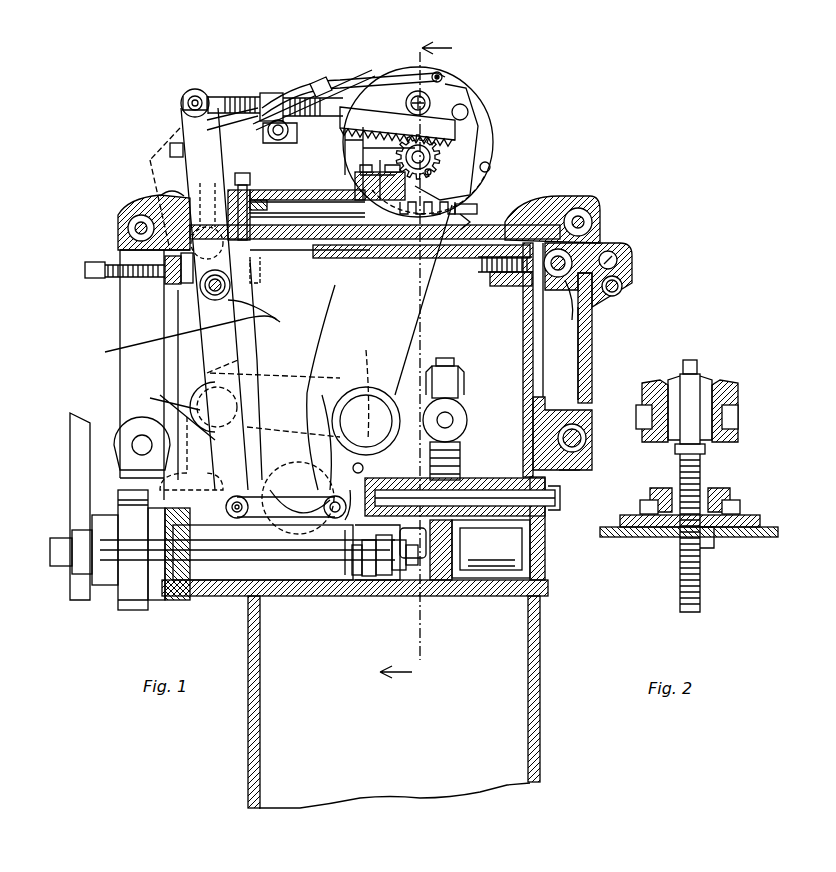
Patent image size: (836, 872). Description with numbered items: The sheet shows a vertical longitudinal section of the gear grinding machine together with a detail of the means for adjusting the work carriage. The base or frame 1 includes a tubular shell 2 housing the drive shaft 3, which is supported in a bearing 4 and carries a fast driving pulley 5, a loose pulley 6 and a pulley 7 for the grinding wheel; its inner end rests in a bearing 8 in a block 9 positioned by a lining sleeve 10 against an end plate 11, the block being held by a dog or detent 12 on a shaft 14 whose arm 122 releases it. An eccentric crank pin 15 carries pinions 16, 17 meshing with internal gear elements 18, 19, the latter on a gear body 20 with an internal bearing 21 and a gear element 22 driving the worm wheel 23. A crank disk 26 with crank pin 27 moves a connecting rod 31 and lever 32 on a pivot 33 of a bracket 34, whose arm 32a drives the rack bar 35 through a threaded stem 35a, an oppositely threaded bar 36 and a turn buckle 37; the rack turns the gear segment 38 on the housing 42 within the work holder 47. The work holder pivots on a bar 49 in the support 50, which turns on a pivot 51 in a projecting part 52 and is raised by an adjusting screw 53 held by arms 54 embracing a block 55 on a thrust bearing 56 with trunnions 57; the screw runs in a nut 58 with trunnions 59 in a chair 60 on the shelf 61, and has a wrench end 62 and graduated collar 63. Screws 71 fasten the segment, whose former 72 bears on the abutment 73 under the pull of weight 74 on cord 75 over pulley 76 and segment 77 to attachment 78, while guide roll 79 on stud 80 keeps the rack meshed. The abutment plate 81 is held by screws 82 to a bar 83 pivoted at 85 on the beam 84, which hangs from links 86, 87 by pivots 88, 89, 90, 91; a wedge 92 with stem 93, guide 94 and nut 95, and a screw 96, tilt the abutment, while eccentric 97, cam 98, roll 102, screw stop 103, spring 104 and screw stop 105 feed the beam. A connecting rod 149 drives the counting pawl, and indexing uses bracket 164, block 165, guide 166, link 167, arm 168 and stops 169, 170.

In FIG. 1, the base or frame 1 is at (520, 673).
In FIG. 1, the tubular shell 2 is at (203, 600).
In FIG. 1, the drive shaft 3 is at (224, 624).
In FIG. 1, the bearing 4 is at (167, 600).
In FIG. 1, the fast driving pulley 5 is at (67, 585).
In FIG. 1, the loose pulley 6 is at (103, 590).
In FIG. 1, the pulley 7 is at (126, 610).
In FIG. 1, the bearing 8 is at (400, 562).
In FIG. 1, the block 9 is at (440, 568).
In FIG. 1, the lining sleeve 10 is at (417, 145).
In FIG. 1, the end plate 11 is at (545, 575).
In FIG. 1, the dog or detent 12 is at (416, 543).
In FIG. 1, the shaft 14 is at (480, 496).
In FIG. 1, the eccentric crank pin 15 is at (368, 580).
In FIG. 1, the pinion 16 is at (382, 580).
In FIG. 1, the pinion 17 is at (356, 578).
In FIG. 1, the internal gear element 18 is at (398, 575).
In FIG. 1, the internal gear element 19 is at (326, 656).
In FIG. 1, the gear body 20 is at (340, 585).
In FIG. 1, the internal bearing 21 is at (350, 580).
In FIG. 1, the gear element 22 is at (300, 582).
In FIG. 1, the skew gear or worm wheel 23 is at (292, 490).
In FIG. 1, the crank disk 26 is at (307, 440).
In FIG. 1, the crank pin 27 is at (328, 470).
In FIG. 1, the link or connecting rod 31 is at (262, 505).
In FIG. 1, the lever 32 is at (223, 353).
In FIG. 1, the arm 32a is at (210, 150).
In FIG. 1, the pivot 33 is at (230, 287).
In FIG. 1, the bracket 34 is at (177, 339).
In FIG. 1, the rack bar 35 is at (355, 80).
In FIG. 1, the threaded stem 35a is at (300, 100).
In FIG. 1, the oppositely threaded bar 36 is at (230, 98).
In FIG. 1, the coupling nut or turn buckle 37 is at (270, 92).
In FIG. 1, the gear segment 38 is at (462, 128).
In FIG. 1, the housing 42 is at (495, 132).
In FIG. 1, the carriage or work holder 47 is at (420, 312).
In FIG. 1, the bar 49 is at (360, 390).
In FIG. 1, the work holder support 50 is at (412, 395).
In FIG. 1, the pivot 51 is at (171, 413).
In FIG. 1, the projecting part 52 is at (186, 398).
In FIG. 1, the adjusting screw 53 is at (486, 455).
In FIG. 2, the adjusting screw 53 is at (700, 588).
In FIG. 1, the arms 54 is at (452, 395).
In FIG. 2, the arms 54 is at (728, 385).
In FIG. 2, the block 55 is at (712, 380).
In FIG. 2, the thrust bearing 56 is at (676, 450).
In FIG. 2, the trunnions 57 is at (730, 410).
In FIG. 2, the nut 58 is at (715, 540).
In FIG. 2, the trunnions 59 is at (730, 500).
In FIG. 2, the chair 60 is at (648, 535).
In FIG. 2, the horizontal web or shelf 61 is at (622, 538).
In FIG. 2, the upper end of screw 62 is at (688, 360).
In FIG. 2, the collar 63 is at (700, 390).
In FIG. 1, the screws 71 is at (440, 150).
In FIG. 1, the former 72 is at (470, 222).
In FIG. 1, the abutment 73 is at (400, 175).
In FIG. 1, the weight 74 is at (150, 485).
In FIG. 1, the cord 75 is at (190, 322).
In FIG. 1, the guide pulley 76 is at (188, 180).
In FIG. 1, the segment 77 is at (474, 218).
In FIG. 1, the point of attachment 78 is at (491, 167).
In FIG. 1, the guide roll 79 is at (436, 90).
In FIG. 1, the stud 80 is at (468, 106).
In FIG. 1, the plate or block 81 is at (372, 140).
In FIG. 1, the screws 82 is at (370, 176).
In FIG. 1, the bar 83 is at (300, 190).
In FIG. 1, the channel bar or beam 84 is at (520, 222).
In FIG. 1, the pivot 85 is at (300, 222).
In FIG. 1, the link 86 is at (570, 350).
In FIG. 1, the link 87 is at (125, 318).
In FIG. 1, the pivot 88 is at (582, 218).
In FIG. 1, the pivot 89 is at (138, 240).
In FIG. 1, the pivot 90 is at (580, 448).
In FIG. 1, the pivot 91 is at (136, 444).
In FIG. 1, the wedge 92 is at (272, 207).
In FIG. 1, the stem 93 is at (330, 240).
In FIG. 1, the guide 94 is at (410, 216).
In FIG. 1, the nut 95 is at (458, 214).
In FIG. 1, the screw 96 is at (243, 174).
In FIG. 1, the cam or eccentric 97 is at (559, 278).
In FIG. 1, the regulating cam 98 is at (620, 268).
In FIG. 1, the roll 102 is at (577, 305).
In FIG. 1, the screw stop 103 is at (525, 285).
In FIG. 1, the helical spring 104 is at (158, 215).
In FIG. 1, the screw stop 105 is at (140, 262).
In FIG. 1, the arm 122 is at (560, 498).
In FIG. 1, the connecting rod 149 is at (364, 468).
In FIG. 1, the stationary bracket 164 is at (298, 132).
In FIG. 1, the pivoted block 165 is at (290, 98).
In FIG. 1, the guide member 166 is at (244, 100).
In FIG. 1, the link 167 is at (378, 68).
In FIG. 1, the arm 168 is at (445, 78).
In FIG. 1, the stop 169 is at (178, 70).
In FIG. 1, the stop 170 is at (332, 76).